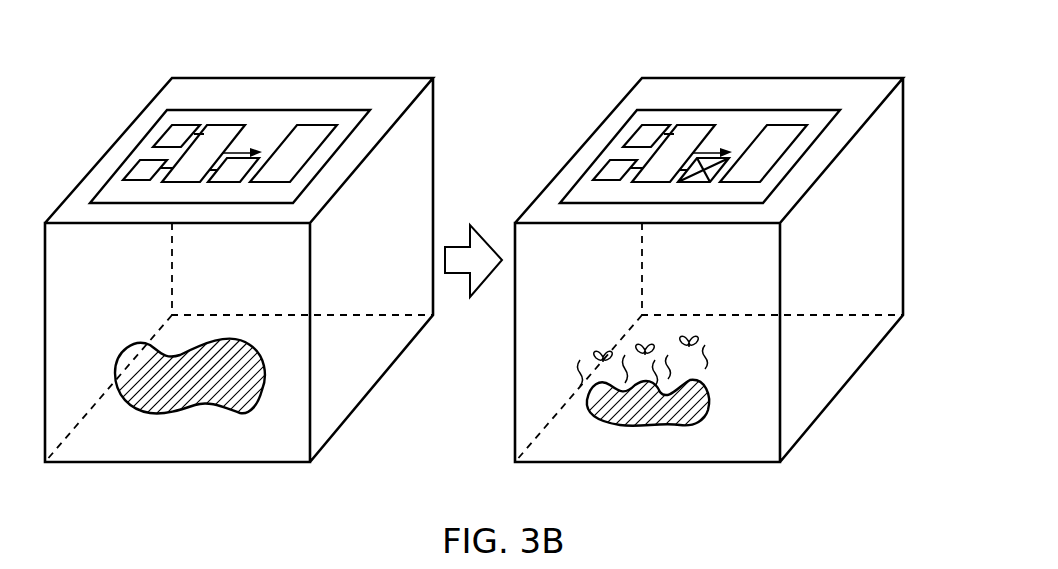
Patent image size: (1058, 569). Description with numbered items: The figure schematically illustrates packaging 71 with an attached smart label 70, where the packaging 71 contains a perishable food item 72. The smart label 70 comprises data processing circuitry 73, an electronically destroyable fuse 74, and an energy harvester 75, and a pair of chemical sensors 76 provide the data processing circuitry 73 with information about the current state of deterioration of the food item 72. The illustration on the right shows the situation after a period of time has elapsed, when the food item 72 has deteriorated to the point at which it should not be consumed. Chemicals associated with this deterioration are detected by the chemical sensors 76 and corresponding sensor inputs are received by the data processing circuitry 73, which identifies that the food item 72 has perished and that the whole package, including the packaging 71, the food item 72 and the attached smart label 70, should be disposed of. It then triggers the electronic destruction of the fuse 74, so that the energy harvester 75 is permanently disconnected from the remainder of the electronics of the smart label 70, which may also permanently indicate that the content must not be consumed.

The smart label 70 is at (258, 108).
The packaging 71 is at (437, 117).
The perishable food item 72 is at (140, 413).
The data processing circuitry 73 is at (183, 155).
The electronically destroyable fuse 74 is at (228, 184).
The energy harvester 75 is at (320, 145).
The chemical sensors 76 is at (163, 132).